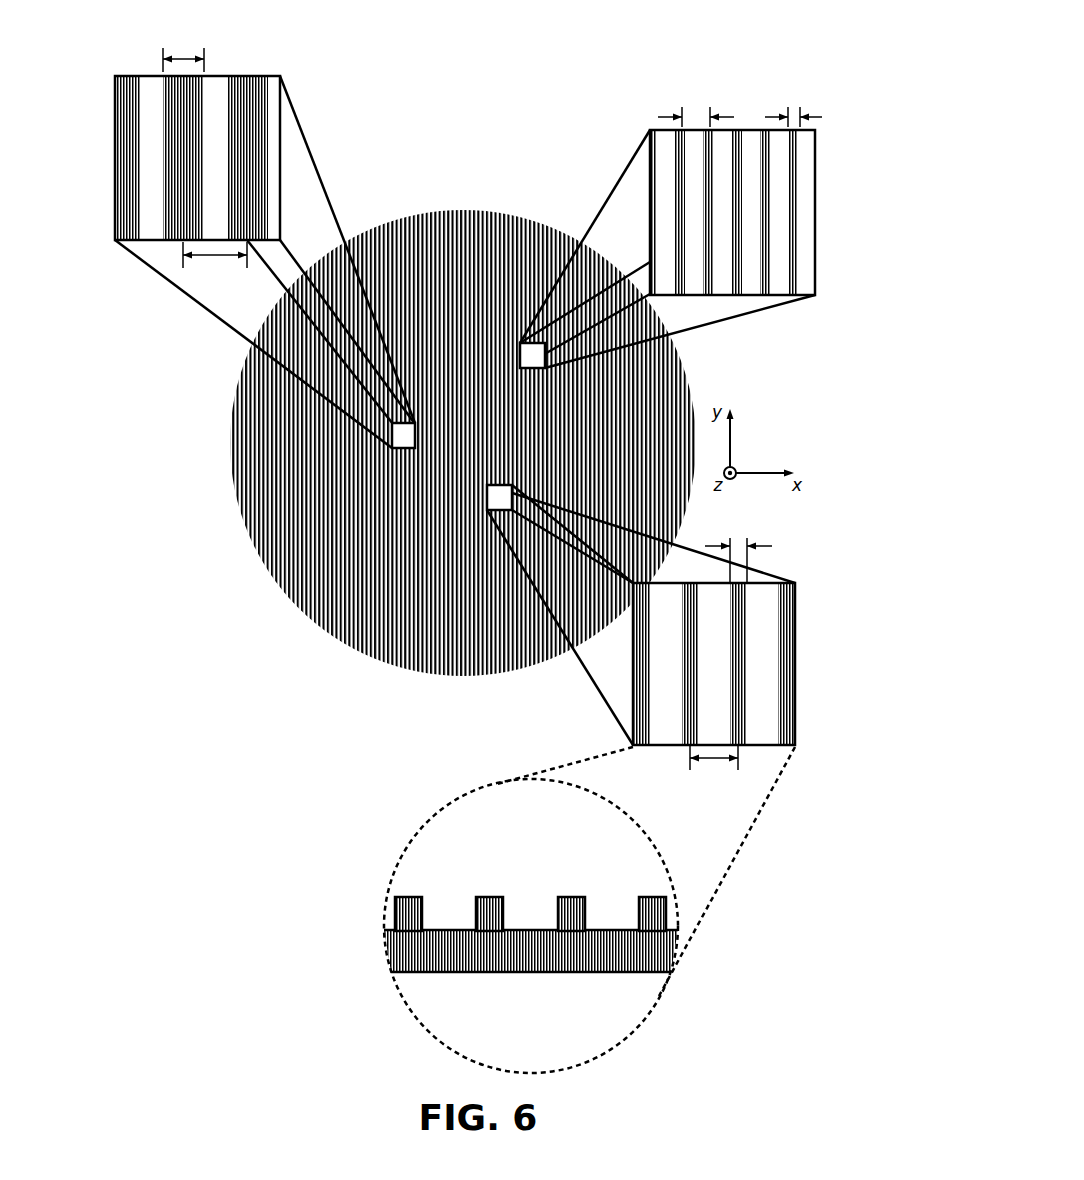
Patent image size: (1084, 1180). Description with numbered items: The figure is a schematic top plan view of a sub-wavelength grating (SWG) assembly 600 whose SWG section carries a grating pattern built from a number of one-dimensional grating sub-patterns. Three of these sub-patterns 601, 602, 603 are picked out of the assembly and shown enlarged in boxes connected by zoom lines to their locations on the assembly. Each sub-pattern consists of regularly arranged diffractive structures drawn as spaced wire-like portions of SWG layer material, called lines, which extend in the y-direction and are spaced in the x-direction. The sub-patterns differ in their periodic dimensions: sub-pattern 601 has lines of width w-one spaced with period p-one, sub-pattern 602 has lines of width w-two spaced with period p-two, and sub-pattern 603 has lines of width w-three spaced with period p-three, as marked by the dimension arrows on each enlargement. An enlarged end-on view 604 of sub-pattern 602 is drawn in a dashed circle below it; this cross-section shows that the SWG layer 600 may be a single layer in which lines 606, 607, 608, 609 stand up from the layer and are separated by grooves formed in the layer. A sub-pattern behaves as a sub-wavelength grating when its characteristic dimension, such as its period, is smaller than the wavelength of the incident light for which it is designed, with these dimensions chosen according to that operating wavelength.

The SWG assembly 600 is at (463, 208).
The grating sub-pattern 601 is at (254, 76).
The grating sub-pattern 602 is at (795, 640).
The grating sub-pattern 603 is at (815, 173).
The end-on view 604 is at (429, 829).
The line 606 is at (405, 897).
The line 607 is at (487, 897).
The line 608 is at (570, 897).
The line 609 is at (655, 898).